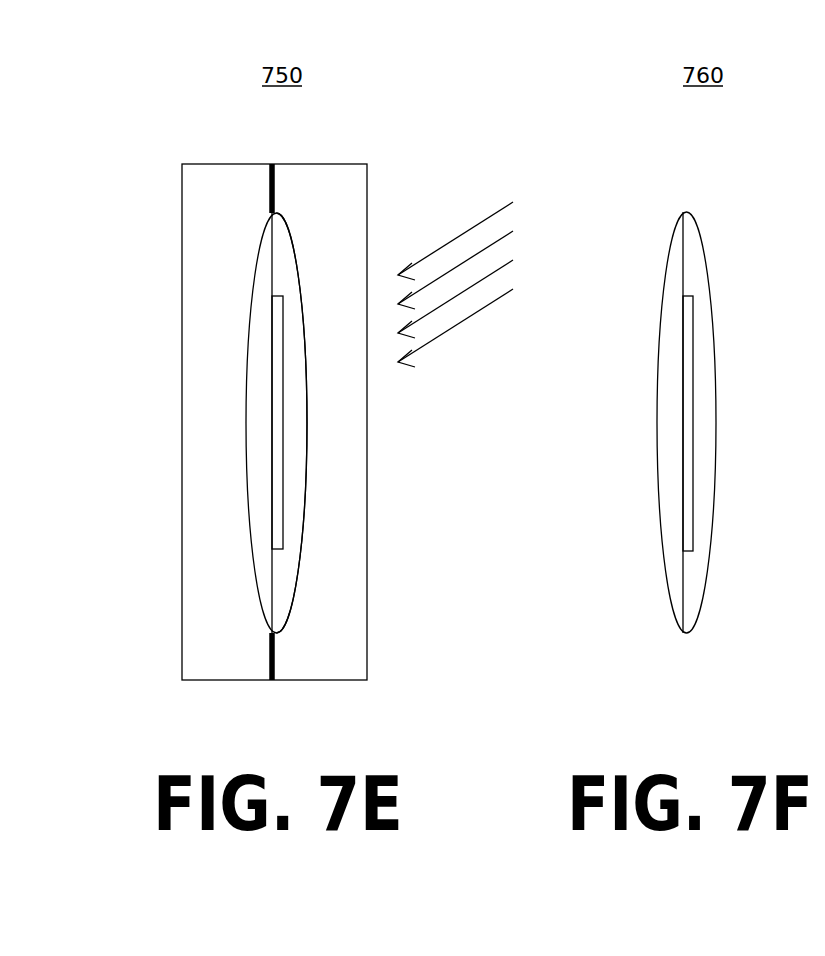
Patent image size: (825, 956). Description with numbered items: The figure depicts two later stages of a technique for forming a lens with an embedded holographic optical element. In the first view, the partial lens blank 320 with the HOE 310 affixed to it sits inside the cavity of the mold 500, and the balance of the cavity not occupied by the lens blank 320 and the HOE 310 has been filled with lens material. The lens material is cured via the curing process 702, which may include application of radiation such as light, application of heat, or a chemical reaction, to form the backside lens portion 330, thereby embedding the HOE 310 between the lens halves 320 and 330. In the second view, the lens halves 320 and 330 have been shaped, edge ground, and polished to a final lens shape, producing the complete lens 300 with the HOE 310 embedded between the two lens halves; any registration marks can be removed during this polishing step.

In FIG. 7E, the mold 500 is at (138, 317).
In FIG. 7E, the partial lens blank 320 is at (249, 457).
In FIG. 7E, the HOE 310 is at (283, 416).
In FIG. 7E, the backside lens portion 330 is at (305, 488).
In FIG. 7E, the curing process 702 is at (490, 284).
In FIG. 7F, the lens 300 is at (638, 417).